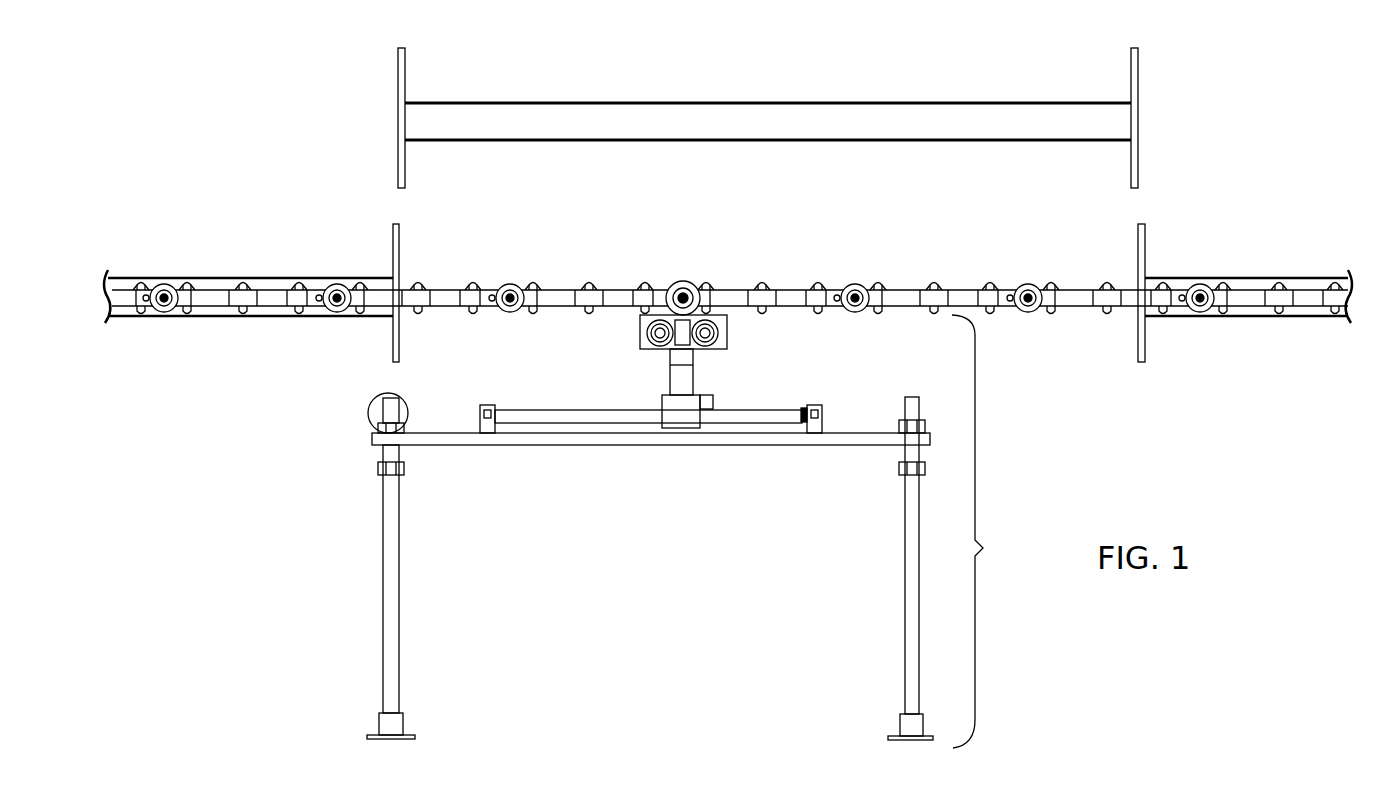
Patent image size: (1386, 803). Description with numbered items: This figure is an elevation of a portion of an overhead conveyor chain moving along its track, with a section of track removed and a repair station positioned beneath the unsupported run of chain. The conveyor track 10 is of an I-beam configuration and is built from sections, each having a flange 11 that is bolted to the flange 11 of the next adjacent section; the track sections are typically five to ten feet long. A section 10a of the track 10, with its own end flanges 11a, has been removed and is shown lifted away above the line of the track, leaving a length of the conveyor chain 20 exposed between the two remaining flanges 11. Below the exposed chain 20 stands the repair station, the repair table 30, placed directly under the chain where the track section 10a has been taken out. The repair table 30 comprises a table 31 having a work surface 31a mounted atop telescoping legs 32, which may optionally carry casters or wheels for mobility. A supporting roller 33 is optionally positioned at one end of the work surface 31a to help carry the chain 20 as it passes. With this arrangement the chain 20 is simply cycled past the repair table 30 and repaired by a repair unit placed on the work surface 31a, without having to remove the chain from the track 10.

The section of conveyor track 10a is at (822, 100).
The flange 11a is at (398, 73).
The conveyor track 10 is at (237, 278).
The flange 11 is at (393, 243).
The conveyor chain 20 is at (1080, 312).
The repair table 30 is at (668, 514).
The repair table 31 is at (632, 572).
The work surface 31a is at (606, 445).
The telescoping legs 32 is at (383, 600).
The supporting roller 33 is at (372, 405).